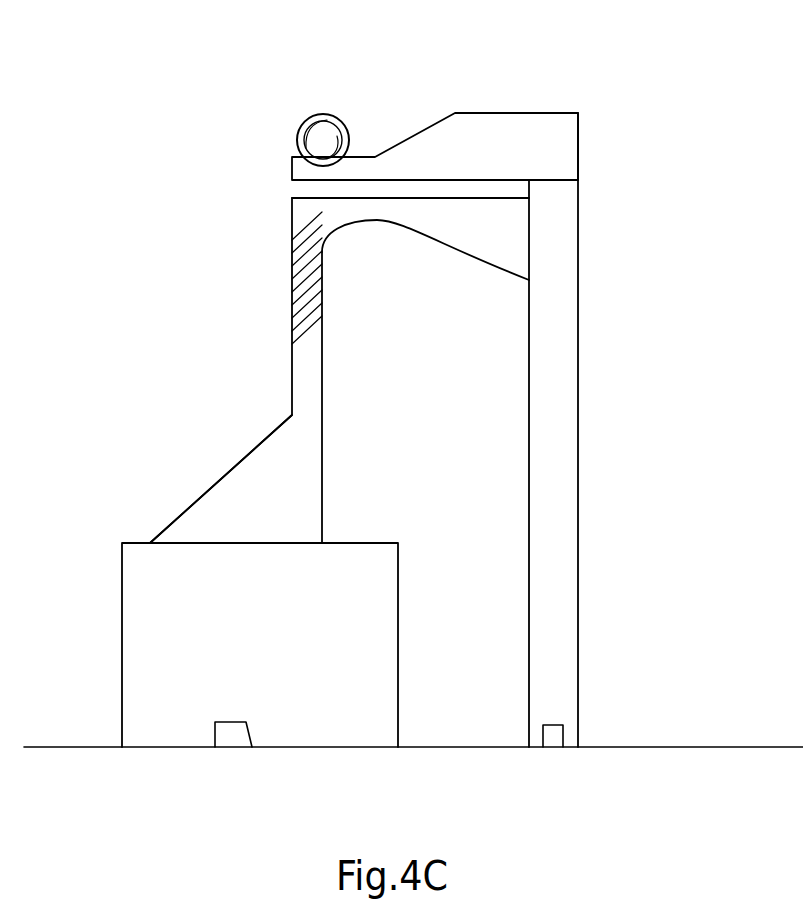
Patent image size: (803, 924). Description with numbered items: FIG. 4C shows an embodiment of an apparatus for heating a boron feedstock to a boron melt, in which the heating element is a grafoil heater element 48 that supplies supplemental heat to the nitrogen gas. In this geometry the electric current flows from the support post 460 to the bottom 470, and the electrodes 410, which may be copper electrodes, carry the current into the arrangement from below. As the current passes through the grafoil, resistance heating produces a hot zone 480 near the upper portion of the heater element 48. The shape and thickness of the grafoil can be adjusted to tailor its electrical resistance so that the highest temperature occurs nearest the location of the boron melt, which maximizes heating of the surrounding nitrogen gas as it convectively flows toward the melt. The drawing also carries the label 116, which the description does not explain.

The roller 116 is at (323, 113).
The hot zone 480 is at (292, 305).
The grafoil heater element 48 is at (213, 402).
The support post 460 is at (562, 441).
The bottom 470 is at (378, 641).
The electrodes 410 is at (232, 730).